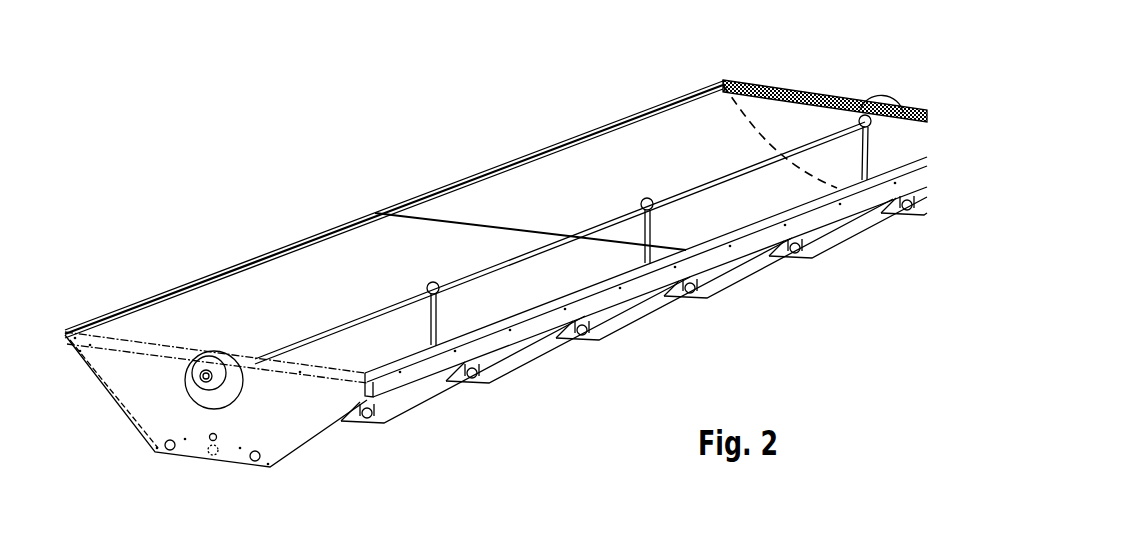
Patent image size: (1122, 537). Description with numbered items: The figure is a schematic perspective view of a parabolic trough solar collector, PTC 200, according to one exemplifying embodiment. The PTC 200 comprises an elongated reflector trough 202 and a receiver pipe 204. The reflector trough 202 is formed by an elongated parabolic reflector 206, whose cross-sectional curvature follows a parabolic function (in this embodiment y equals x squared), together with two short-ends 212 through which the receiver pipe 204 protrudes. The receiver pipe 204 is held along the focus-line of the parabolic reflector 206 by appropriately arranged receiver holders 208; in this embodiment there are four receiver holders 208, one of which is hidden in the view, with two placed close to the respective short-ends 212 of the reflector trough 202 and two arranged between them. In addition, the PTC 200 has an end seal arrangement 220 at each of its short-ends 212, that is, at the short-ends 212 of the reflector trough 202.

The parabolic trough solar collector 200 is at (433, 92).
The reflector trough 202 is at (268, 245).
The receiver pipe 204 is at (408, 302).
The parabolic reflector 206 is at (560, 243).
The receiver holder 208 is at (652, 228).
The short-end 212 is at (284, 441).
The end seal arrangement 220 is at (216, 374).